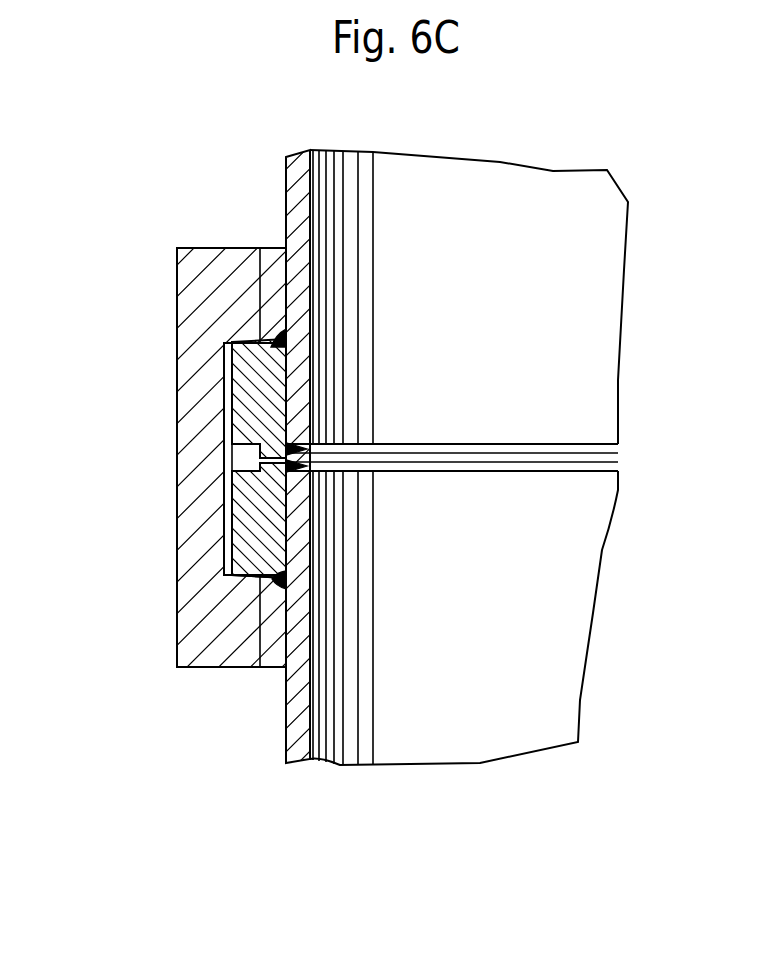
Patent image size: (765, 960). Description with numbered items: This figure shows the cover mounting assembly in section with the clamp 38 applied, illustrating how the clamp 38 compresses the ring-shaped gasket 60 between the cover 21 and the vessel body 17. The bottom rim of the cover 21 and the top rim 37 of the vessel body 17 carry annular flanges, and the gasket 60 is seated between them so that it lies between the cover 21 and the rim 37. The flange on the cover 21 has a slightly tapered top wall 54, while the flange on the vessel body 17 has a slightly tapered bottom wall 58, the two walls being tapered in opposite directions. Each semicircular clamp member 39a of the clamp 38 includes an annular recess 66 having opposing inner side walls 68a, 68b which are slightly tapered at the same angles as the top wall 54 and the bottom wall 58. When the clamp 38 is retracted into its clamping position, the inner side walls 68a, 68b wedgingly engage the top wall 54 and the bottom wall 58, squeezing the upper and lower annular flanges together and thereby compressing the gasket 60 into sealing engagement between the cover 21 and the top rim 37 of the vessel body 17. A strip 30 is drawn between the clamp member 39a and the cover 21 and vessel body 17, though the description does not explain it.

The clamp 38 is at (160, 226).
The compressible strip 30 is at (286, 179).
The top wall 54 is at (266, 341).
The cover 21 is at (527, 241).
The inner side wall 68a is at (246, 343).
The semicircular clamp member 39a is at (177, 463).
The ring-shaped gasket 60 is at (438, 457).
The annular recess 66 is at (236, 535).
The inner side wall 68b is at (243, 571).
The top rim 37 is at (520, 487).
The bottom wall 58 is at (270, 584).
The vessel body 17 is at (494, 690).